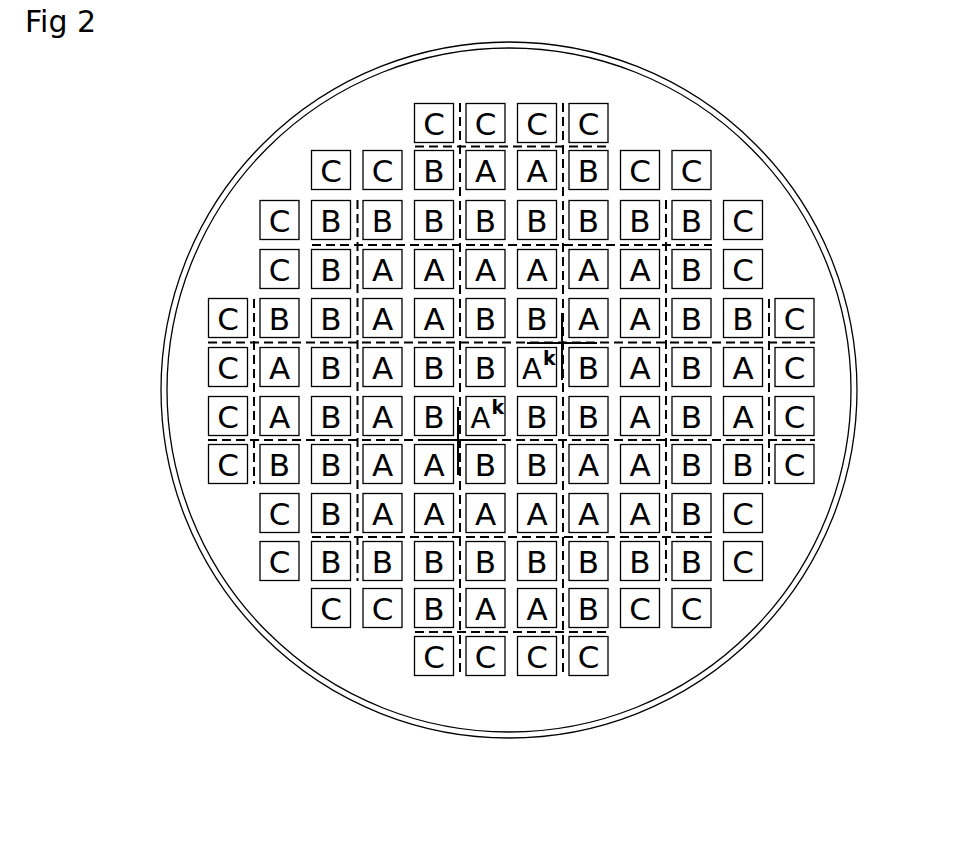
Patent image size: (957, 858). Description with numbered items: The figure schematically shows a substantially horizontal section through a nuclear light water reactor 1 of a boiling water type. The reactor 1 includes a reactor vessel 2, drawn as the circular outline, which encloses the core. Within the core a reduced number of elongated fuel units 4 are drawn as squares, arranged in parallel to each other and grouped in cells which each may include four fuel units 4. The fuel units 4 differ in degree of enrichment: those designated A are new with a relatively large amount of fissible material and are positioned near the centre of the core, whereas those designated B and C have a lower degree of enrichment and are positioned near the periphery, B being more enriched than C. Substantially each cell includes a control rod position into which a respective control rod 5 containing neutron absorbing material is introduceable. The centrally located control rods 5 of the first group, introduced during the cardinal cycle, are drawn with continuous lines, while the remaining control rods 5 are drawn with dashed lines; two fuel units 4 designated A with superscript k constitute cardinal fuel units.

The nuclear light water reactor 1 is at (330, 80).
The reactor vessel 2 is at (374, 74).
The fuel units 4 is at (417, 212).
The control rods 5 is at (560, 135).